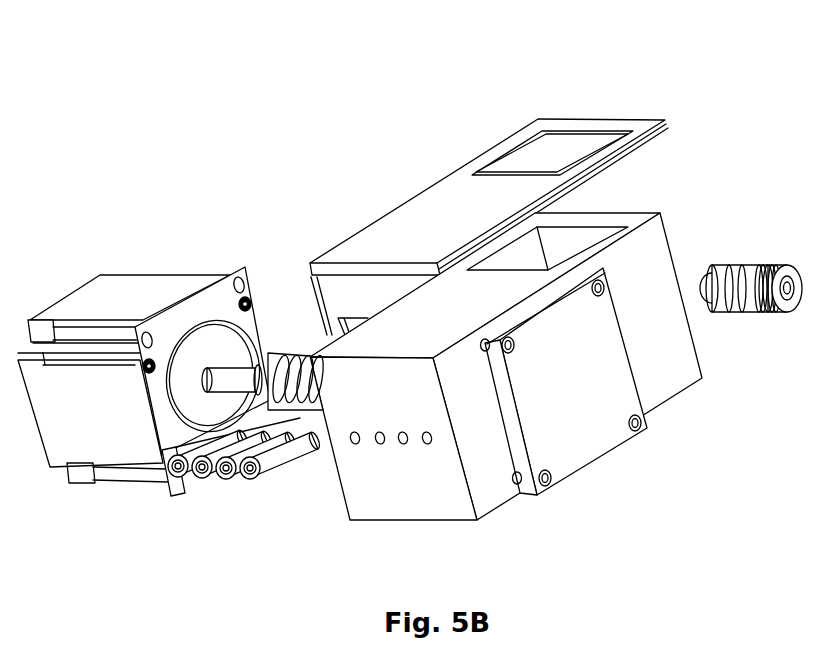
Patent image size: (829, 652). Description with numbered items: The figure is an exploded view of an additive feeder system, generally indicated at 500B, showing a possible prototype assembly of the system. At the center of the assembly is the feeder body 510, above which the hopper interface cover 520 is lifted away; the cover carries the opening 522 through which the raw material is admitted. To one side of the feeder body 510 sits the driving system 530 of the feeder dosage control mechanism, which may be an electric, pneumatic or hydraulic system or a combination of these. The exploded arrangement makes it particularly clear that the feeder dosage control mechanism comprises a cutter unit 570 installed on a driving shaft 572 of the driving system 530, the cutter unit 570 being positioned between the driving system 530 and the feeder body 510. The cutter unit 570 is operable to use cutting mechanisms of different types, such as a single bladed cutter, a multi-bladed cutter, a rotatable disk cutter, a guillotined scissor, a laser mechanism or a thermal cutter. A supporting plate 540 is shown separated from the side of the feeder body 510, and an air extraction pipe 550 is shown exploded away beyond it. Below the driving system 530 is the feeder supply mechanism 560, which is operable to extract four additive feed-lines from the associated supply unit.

The additive feeder system exploded view 500B is at (651, 50).
The feeder body 510 is at (398, 488).
The hopper interface cover 520 is at (489, 227).
The opening 522 is at (533, 167).
The driving system 530 is at (135, 300).
The supporting plate 540 is at (607, 437).
The air extraction pipe 550 is at (748, 290).
The feeder supply mechanism 560 is at (237, 487).
The cutter unit 570 is at (286, 372).
The driving shaft 572 is at (232, 378).